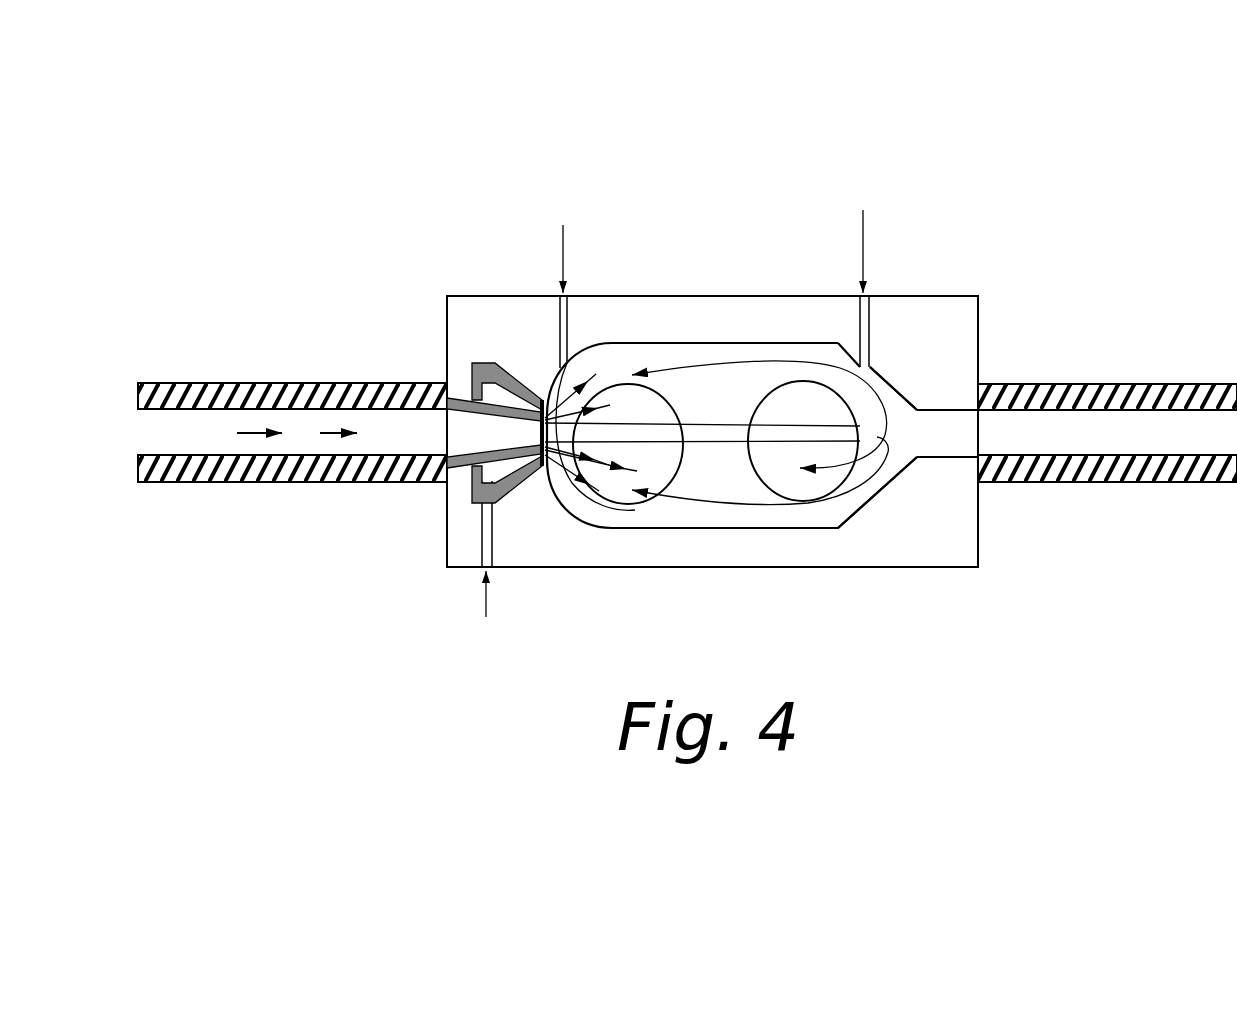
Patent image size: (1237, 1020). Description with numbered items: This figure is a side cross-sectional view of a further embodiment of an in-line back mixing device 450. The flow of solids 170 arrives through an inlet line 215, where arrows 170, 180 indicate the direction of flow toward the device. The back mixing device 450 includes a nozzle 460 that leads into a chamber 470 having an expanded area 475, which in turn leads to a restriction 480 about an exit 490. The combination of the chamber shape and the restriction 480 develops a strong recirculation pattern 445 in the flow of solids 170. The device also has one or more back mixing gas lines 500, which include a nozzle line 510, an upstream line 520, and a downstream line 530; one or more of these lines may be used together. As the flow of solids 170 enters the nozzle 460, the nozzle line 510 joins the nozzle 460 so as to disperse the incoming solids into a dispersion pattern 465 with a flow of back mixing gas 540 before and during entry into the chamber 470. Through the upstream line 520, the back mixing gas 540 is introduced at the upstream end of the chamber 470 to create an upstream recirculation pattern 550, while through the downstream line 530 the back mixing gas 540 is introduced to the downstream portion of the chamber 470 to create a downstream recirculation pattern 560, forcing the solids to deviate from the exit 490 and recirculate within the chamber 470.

The back mixing device 450 is at (392, 216).
The inlet pipe 215 is at (278, 381).
The flow of solids 170 is at (243, 434).
The fluid flow arrow 180 is at (323, 434).
The nozzle 460 is at (514, 373).
The back mixing gas lines 500 is at (474, 554).
The dispersion pattern 465 is at (594, 372).
The chamber 470 is at (690, 342).
The expanded area 475 is at (614, 530).
The restriction 480 is at (895, 391).
The exit 490 is at (947, 428).
The recirculation pattern 445 is at (744, 503).
The nozzle line 510 is at (506, 537).
The upstream line 520 is at (568, 337).
The downstream line 530 is at (867, 332).
The back mixing gas 540 is at (564, 257).
The upstream recirculation pattern 550 is at (645, 495).
The downstream recirculation pattern 560 is at (806, 506).